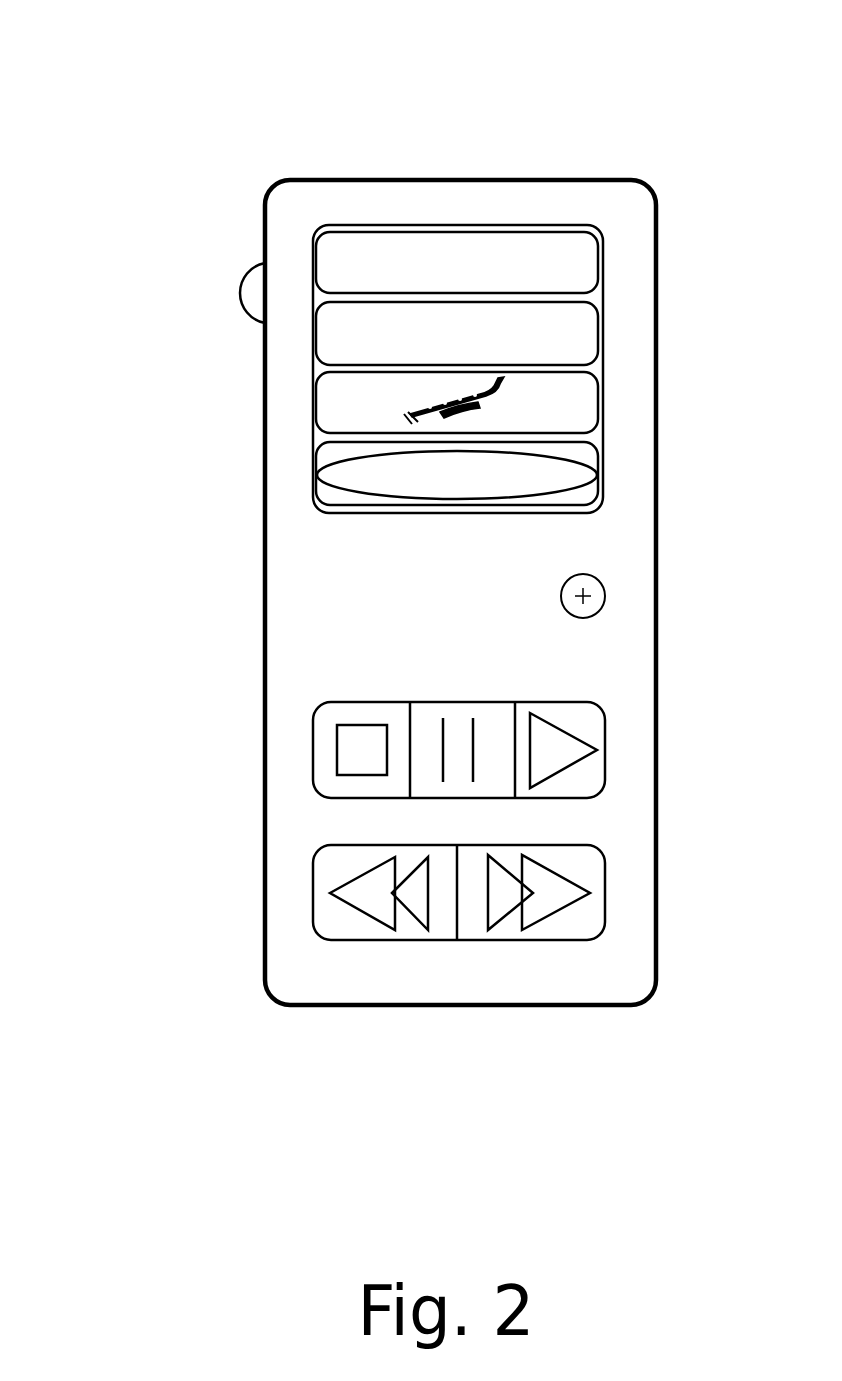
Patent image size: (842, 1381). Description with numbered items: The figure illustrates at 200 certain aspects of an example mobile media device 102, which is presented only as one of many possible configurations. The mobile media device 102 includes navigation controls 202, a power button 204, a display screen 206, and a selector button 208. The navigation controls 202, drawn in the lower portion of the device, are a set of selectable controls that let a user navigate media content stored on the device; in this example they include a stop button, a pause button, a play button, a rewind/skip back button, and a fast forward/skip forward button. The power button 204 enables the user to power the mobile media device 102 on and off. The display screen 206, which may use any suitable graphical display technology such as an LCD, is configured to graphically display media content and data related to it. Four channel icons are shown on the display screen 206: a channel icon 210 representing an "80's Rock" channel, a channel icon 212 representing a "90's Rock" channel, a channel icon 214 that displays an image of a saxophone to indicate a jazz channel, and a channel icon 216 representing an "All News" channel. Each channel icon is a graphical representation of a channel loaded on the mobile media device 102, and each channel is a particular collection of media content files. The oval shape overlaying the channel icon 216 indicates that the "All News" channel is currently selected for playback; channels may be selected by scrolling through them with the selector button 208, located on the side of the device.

The aspects of mobile media device 200 is at (158, 36).
The mobile media device 102 is at (268, 182).
The navigation controls 202 is at (332, 957).
The power button 204 is at (597, 578).
The display screen 206 is at (313, 212).
The selector button 208 is at (257, 268).
The channel icon 210 is at (566, 252).
The channel icon 212 is at (566, 319).
The channel icon 214 is at (566, 392).
The channel icon 216 is at (571, 457).